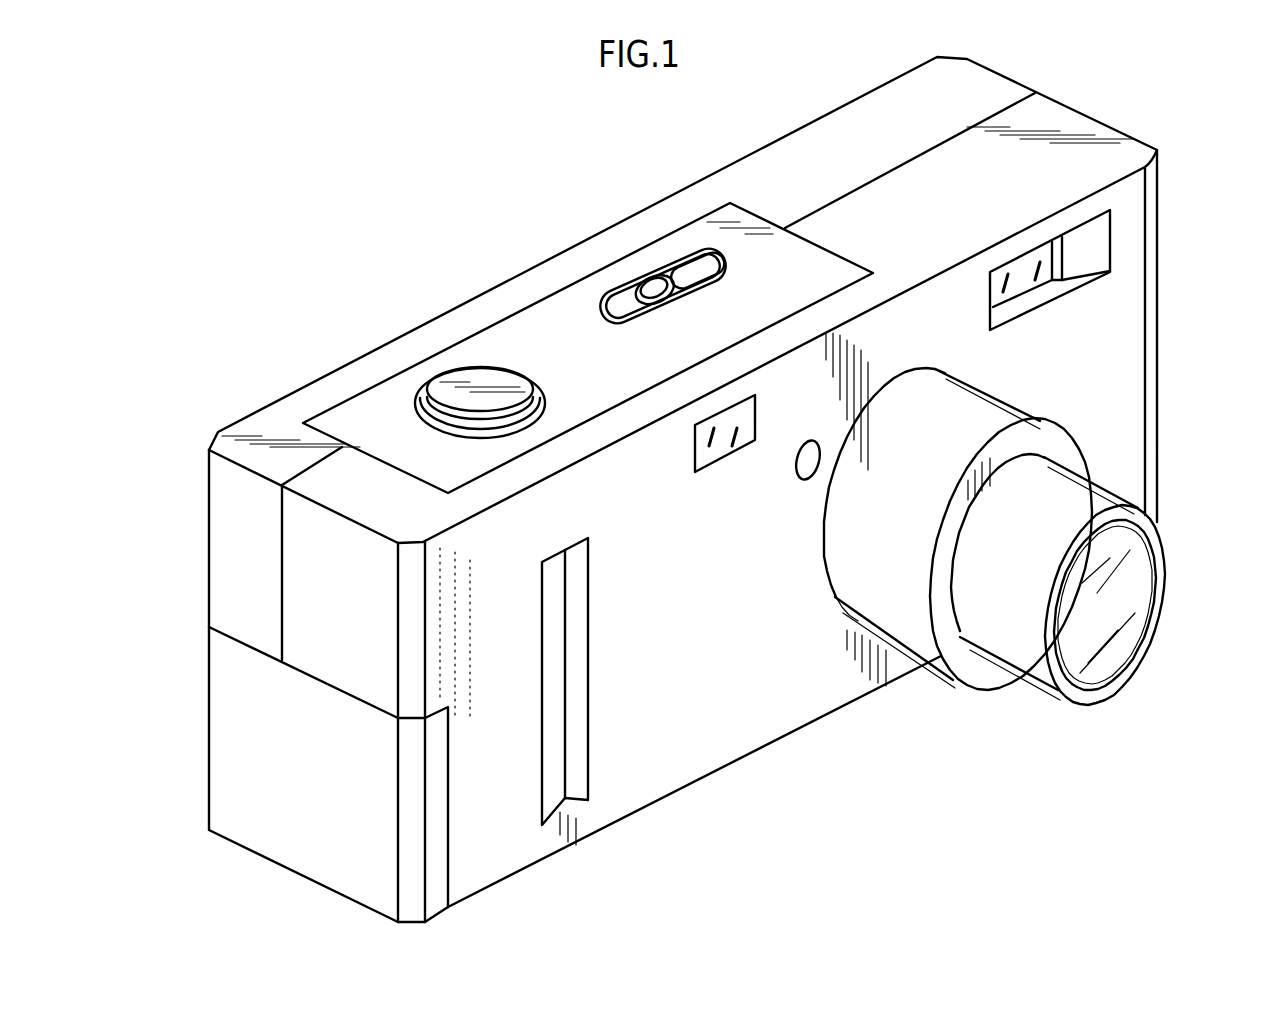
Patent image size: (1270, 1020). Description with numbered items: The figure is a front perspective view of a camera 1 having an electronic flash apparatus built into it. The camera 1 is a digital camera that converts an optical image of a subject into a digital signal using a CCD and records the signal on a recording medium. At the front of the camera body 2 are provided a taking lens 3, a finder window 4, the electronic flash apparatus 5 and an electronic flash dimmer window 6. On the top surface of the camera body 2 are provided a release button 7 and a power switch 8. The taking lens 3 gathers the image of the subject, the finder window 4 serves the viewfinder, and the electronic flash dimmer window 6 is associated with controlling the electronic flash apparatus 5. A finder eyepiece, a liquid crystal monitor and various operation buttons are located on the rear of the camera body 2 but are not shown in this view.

The camera 1 is at (313, 215).
The camera body 2 is at (773, 692).
The taking lens 3 is at (1123, 604).
The finder window 4 is at (1020, 283).
The electronic flash apparatus 5 is at (713, 450).
The electronic flash dimmer window 6 is at (803, 472).
The release button 7 is at (465, 398).
The power switch 8 is at (640, 287).